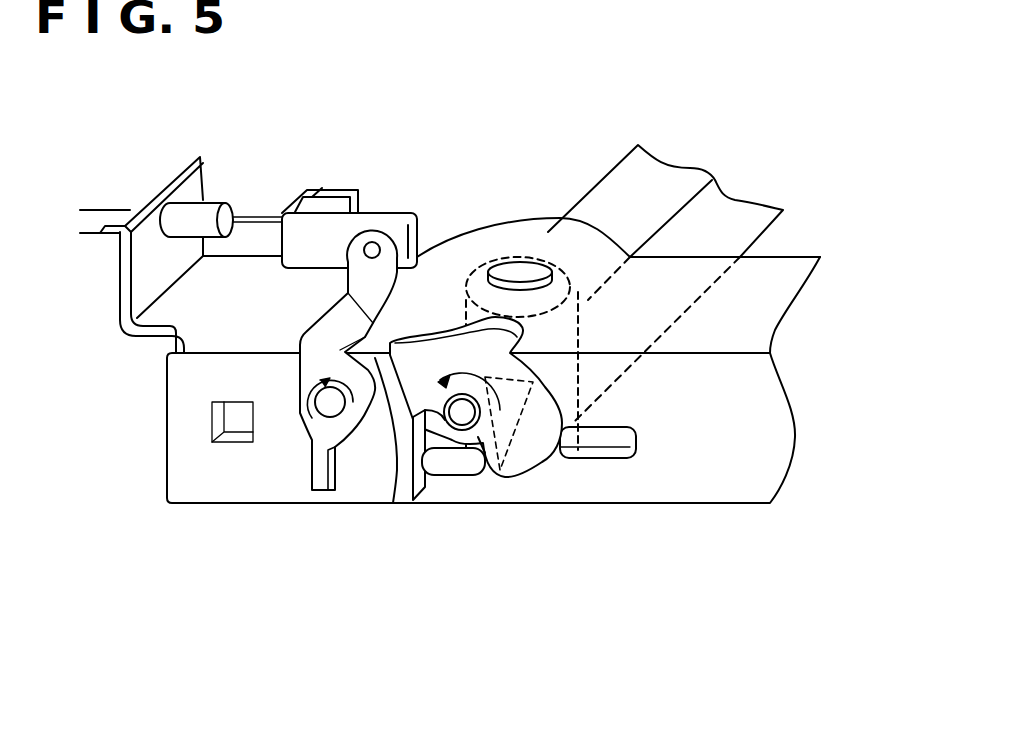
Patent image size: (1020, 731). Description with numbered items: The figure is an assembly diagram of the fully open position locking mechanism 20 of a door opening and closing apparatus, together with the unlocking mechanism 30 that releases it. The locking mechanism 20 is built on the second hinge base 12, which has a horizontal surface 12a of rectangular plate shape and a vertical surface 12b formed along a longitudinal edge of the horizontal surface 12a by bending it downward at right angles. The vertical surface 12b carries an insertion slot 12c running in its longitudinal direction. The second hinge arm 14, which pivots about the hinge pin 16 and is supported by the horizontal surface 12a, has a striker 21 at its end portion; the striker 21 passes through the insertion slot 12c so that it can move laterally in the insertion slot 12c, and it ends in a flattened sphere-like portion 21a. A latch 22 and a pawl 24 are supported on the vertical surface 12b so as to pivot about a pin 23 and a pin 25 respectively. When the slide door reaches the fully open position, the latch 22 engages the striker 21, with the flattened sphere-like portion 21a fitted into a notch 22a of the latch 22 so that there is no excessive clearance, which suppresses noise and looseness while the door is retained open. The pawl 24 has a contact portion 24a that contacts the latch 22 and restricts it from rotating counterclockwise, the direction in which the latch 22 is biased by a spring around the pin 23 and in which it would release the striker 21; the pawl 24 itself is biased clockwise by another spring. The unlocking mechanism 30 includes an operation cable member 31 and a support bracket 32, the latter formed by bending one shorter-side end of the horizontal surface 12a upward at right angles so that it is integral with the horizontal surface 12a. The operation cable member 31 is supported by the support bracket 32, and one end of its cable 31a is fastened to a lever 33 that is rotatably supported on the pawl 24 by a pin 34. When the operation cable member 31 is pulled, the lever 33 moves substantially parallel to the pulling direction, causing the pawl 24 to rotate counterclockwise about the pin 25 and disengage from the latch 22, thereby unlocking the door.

The second hinge base 12 is at (518, 375).
The horizontal surface 12a is at (780, 273).
The vertical surface 12b is at (730, 487).
The insertion slot 12c is at (628, 448).
The second hinge arm 14 is at (717, 203).
The hinge pin 16 is at (508, 273).
The fully open position locking mechanism 20 is at (343, 411).
The striker 21 is at (439, 500).
The flattened sphere-like portion 21a is at (458, 470).
The latch 22 is at (486, 445).
The notch 22a is at (478, 440).
The pin 23 is at (445, 420).
The pawl 24 is at (262, 361).
The contact portion 24a is at (345, 357).
The pin 25 is at (327, 405).
The unlocking mechanism 30 is at (242, 231).
The operation cable member 31 is at (88, 222).
The cable 31a is at (262, 217).
The support bracket 32 is at (175, 195).
The lever 33 is at (333, 230).
The pin 34 is at (372, 250).